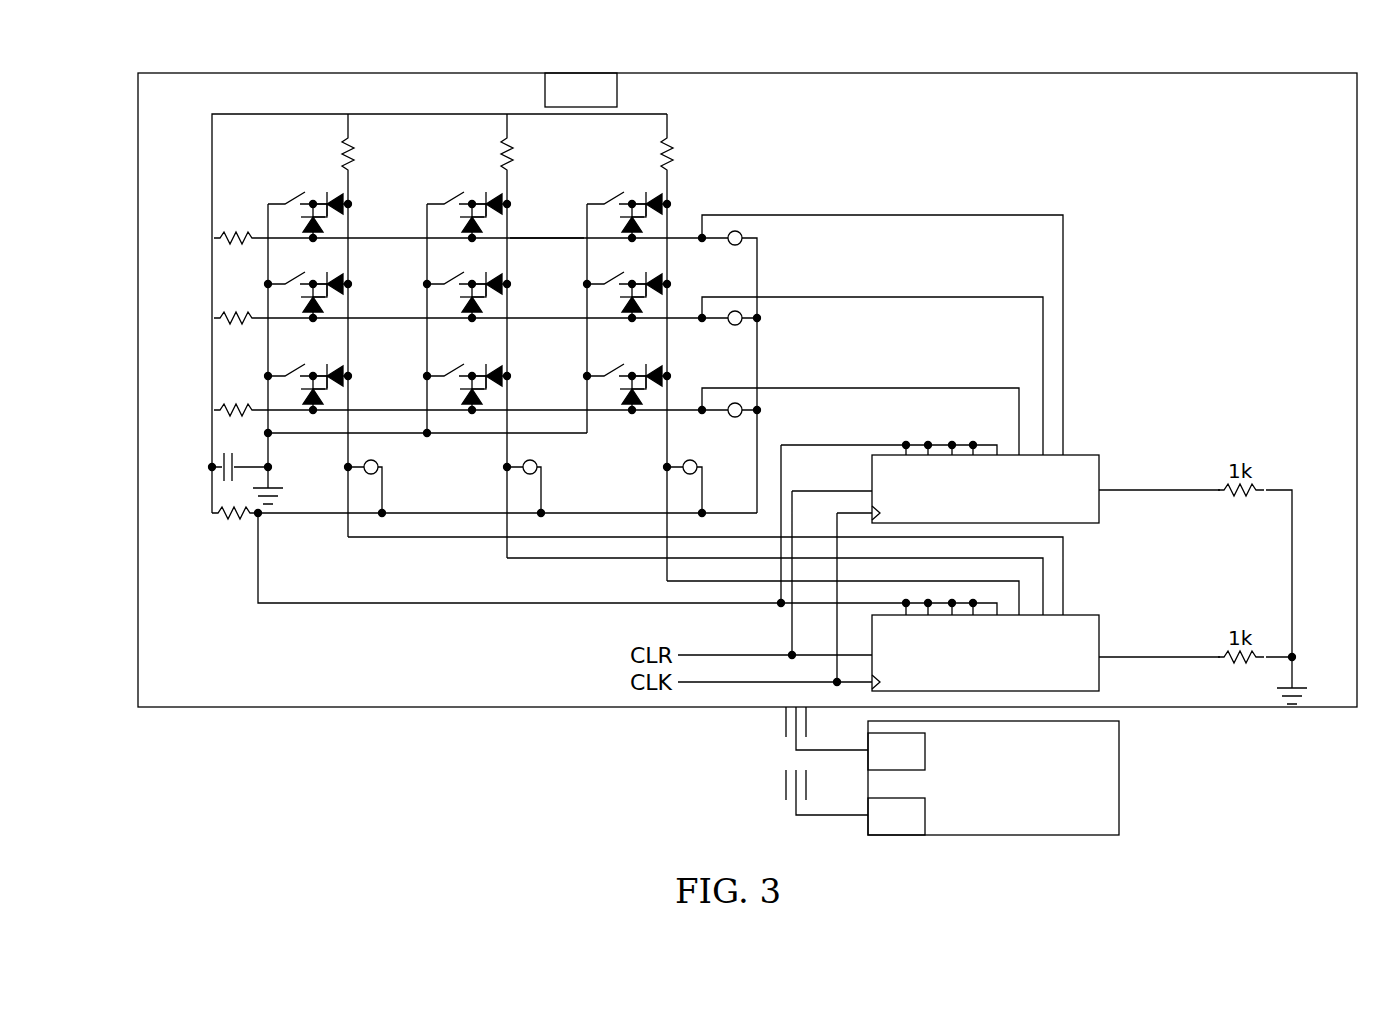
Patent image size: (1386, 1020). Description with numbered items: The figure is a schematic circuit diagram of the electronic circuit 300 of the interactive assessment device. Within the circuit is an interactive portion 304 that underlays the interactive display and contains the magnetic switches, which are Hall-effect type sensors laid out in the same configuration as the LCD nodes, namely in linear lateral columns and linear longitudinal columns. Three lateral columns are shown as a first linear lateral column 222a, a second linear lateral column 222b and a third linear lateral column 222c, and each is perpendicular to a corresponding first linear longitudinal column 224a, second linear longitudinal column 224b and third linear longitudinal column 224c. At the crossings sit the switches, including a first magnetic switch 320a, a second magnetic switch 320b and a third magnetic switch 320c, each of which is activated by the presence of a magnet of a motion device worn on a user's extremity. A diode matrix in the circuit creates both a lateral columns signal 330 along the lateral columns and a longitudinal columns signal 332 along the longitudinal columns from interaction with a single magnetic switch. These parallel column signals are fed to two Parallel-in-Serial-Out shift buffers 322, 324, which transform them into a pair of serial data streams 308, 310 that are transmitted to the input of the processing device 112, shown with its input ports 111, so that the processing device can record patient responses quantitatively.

The electronic circuit 300 is at (224, 56).
The first linear lateral column 222a is at (287, 126).
The second linear lateral column 222b is at (410, 126).
The third linear lateral column 222c is at (647, 303).
The first linear longitudinal column 224a is at (207, 186).
The second linear longitudinal column 224b is at (207, 283).
The third linear longitudinal column 224c is at (207, 365).
The first magnetic switch 320a is at (305, 182).
The second magnetic switch 320b is at (467, 182).
The third magnetic switch 320c is at (339, 266).
The longitudinal columns signal 332 is at (562, 228).
The lateral columns signal 330 is at (680, 180).
The interactive portion 304 is at (766, 206).
The Parallel-in-Serial-Out shift buffer 322 is at (1108, 466).
The Parallel-in-Serial-Out shift buffer 324 is at (1108, 667).
The serial data stream 308 is at (832, 752).
The serial data stream 310 is at (832, 818).
The interface port 111 is at (917, 764).
The processing device 112 is at (1006, 797).